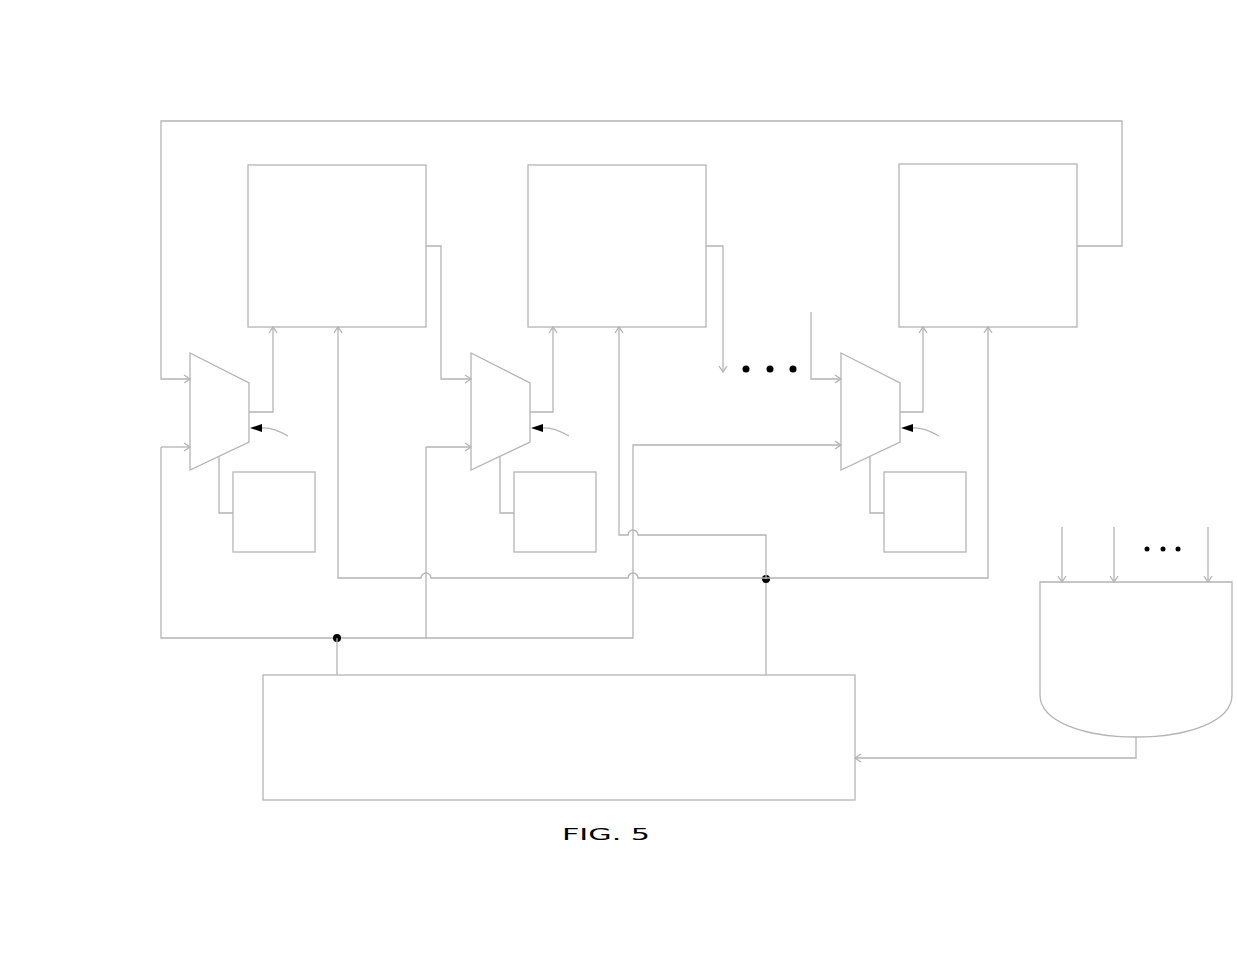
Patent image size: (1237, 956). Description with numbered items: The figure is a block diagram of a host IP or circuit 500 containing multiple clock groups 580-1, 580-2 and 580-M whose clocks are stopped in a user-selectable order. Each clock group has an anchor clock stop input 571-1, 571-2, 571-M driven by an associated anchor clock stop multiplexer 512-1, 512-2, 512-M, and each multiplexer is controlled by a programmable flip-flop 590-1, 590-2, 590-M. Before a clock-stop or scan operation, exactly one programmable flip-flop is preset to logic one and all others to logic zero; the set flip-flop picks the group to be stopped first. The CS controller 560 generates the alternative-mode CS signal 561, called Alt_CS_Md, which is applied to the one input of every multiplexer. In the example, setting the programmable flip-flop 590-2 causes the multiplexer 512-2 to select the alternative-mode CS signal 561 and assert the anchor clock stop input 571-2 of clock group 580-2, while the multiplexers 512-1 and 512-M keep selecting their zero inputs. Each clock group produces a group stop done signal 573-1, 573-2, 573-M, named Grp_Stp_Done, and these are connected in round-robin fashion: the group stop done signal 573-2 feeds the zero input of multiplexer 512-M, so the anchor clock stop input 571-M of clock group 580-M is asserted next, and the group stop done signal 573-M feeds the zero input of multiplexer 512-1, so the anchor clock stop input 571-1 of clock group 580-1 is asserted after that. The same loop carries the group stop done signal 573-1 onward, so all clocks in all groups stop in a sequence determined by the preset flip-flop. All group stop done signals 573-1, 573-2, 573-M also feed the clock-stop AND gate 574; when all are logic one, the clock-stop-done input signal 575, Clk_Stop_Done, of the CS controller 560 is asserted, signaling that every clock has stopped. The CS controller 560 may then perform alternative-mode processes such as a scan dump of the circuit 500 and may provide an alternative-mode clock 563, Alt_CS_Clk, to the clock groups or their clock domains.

The host IP or circuit 500 is at (206, 96).
The clock group 1 580-1 is at (314, 215).
The clock group 2 580-2 is at (594, 215).
The clock group M 580-M is at (963, 215).
The anchor clock stop input 571-1 is at (275, 347).
The anchor clock stop input 571-2 is at (556, 347).
The anchor clock stop input 571-M is at (928, 347).
The group stop done signal 573-1 is at (441, 289).
The group stop done signal 573-2 is at (723, 280).
The group stop done signal 573-M is at (1122, 222).
The anchor clock stop multiplexer 512-1 is at (240, 421).
The anchor clock stop multiplexer 512-2 is at (521, 421).
The anchor clock stop multiplexer 512-M is at (895, 421).
The programmable flip-flop 590-1 is at (251, 546).
The programmable flip-flop 590-2 is at (532, 546).
The programmable flip-flop 590-M is at (900, 546).
The CS controller 560 is at (545, 760).
The alternative-mode CS signal 561 is at (501, 586).
The alternative-mode clock 563 is at (663, 525).
The clock-stop AND gate 574 is at (1125, 673).
The clock-stop-done input signal 575 is at (936, 764).